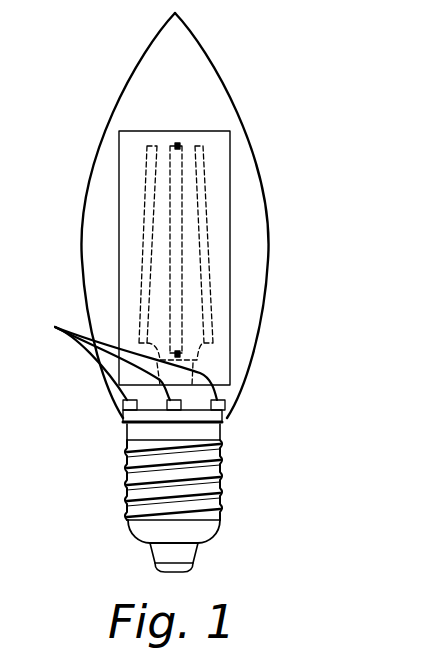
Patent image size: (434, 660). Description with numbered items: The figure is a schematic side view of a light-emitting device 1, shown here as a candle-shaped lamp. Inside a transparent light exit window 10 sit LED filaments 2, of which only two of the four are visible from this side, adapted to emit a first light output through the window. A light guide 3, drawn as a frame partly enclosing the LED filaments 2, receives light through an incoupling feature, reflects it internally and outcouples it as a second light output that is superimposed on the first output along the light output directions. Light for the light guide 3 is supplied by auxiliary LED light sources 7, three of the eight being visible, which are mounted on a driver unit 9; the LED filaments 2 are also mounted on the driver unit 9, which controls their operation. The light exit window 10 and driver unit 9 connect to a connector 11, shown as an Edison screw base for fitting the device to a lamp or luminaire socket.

The light-emitting device 1 is at (242, 93).
The LED filaments 2 is at (197, 172).
The light guide 3 is at (230, 182).
The auxiliary LED light sources 7 is at (130, 347).
The driver unit 9 is at (140, 415).
The transparent light exit window 10 is at (248, 375).
The connector 11 is at (223, 497).